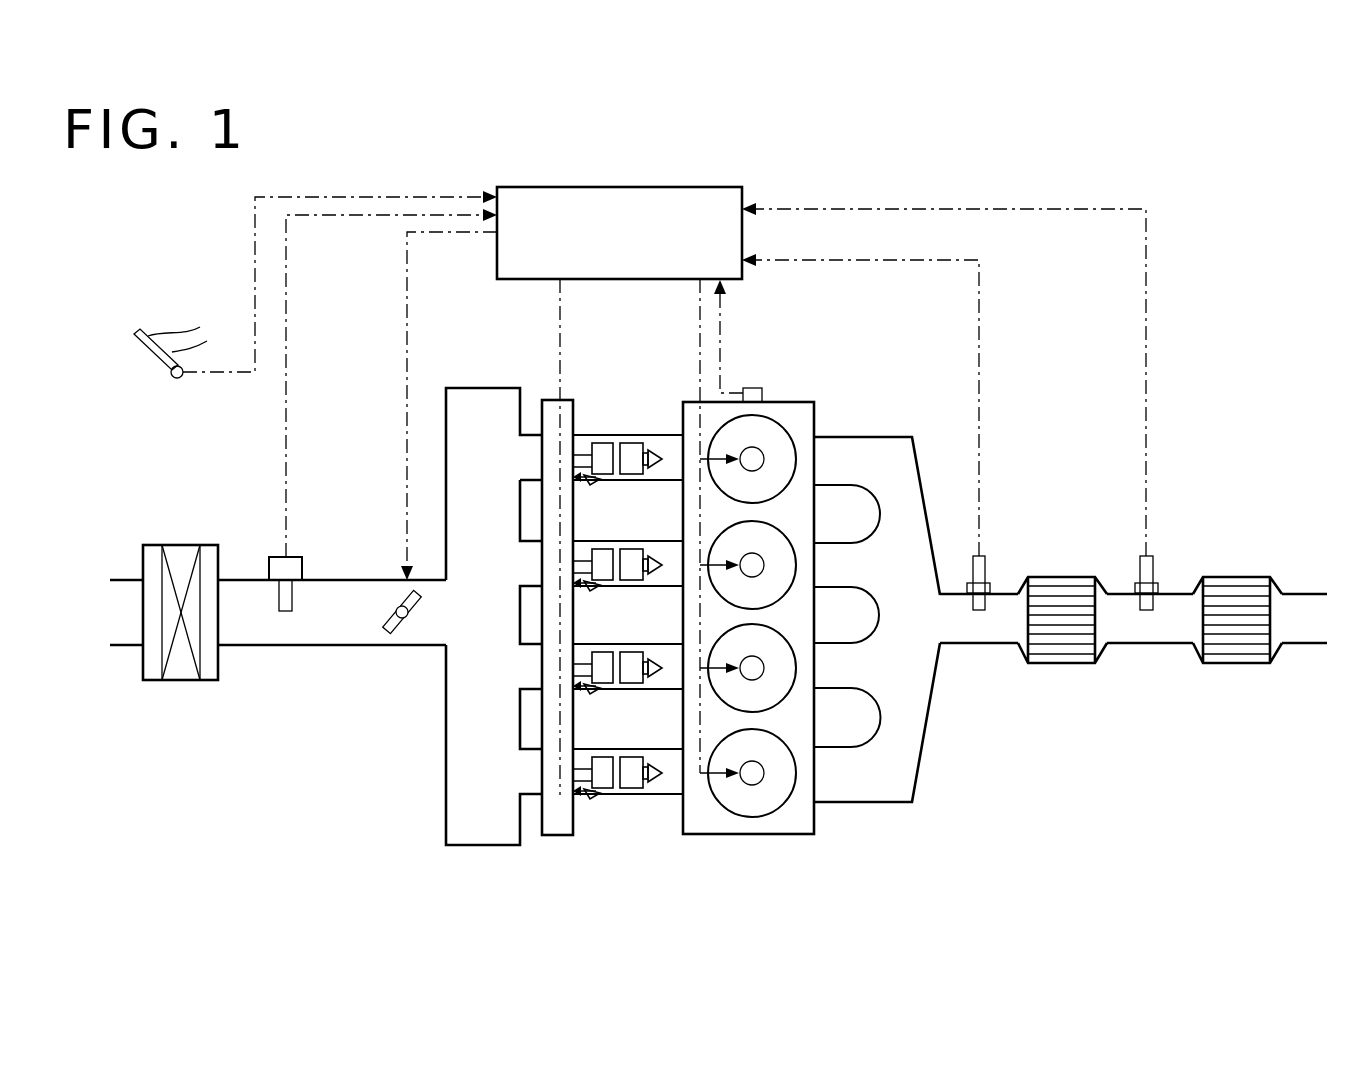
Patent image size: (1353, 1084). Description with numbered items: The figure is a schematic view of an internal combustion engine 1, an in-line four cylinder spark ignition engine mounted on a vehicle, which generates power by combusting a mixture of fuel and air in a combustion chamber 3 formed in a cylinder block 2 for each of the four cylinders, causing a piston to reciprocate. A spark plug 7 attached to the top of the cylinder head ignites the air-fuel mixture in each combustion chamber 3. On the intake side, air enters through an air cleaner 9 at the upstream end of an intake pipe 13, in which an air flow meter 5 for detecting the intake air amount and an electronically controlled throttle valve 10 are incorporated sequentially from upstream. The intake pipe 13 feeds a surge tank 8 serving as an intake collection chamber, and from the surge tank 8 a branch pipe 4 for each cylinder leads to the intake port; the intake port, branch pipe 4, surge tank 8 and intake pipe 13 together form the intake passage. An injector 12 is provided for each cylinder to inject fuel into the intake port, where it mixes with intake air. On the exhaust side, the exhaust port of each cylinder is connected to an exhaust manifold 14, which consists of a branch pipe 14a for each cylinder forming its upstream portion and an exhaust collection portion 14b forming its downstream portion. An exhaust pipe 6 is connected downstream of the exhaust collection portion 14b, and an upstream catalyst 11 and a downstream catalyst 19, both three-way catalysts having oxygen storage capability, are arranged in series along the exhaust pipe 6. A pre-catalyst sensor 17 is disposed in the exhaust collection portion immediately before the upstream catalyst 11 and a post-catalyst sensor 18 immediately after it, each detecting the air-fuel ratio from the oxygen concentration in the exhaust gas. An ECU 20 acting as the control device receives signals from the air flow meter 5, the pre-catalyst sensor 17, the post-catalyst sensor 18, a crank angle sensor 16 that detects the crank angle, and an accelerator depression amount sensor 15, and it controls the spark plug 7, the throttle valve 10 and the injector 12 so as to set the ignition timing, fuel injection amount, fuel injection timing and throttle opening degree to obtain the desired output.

The internal combustion engine 1 is at (404, 817).
The cylinder block 2 is at (780, 834).
The combustion chamber 3 is at (758, 803).
The branch pipe 4 is at (666, 795).
The air flow meter 5 is at (292, 557).
The exhaust pipe 6 is at (968, 648).
The spark plug 7 is at (745, 783).
The surge tank 8 is at (452, 845).
The air cleaner 9 is at (182, 680).
The throttle valve 10 is at (395, 630).
The upstream catalyst 11 is at (1085, 576).
The injector 12 is at (630, 783).
The intake pipe 13 is at (280, 645).
The exhaust manifold 14 is at (933, 669).
The branch pipe 14a is at (848, 802).
The exhaust collection portion 14b is at (923, 748).
The accelerator depression amount sensor 15 is at (175, 383).
The crank angle sensor 16 is at (755, 391).
The pre-catalyst sensor 17 is at (980, 557).
The post-catalyst sensor 18 is at (1148, 556).
The downstream catalyst 19 is at (1232, 664).
The ECU 20 is at (622, 195).